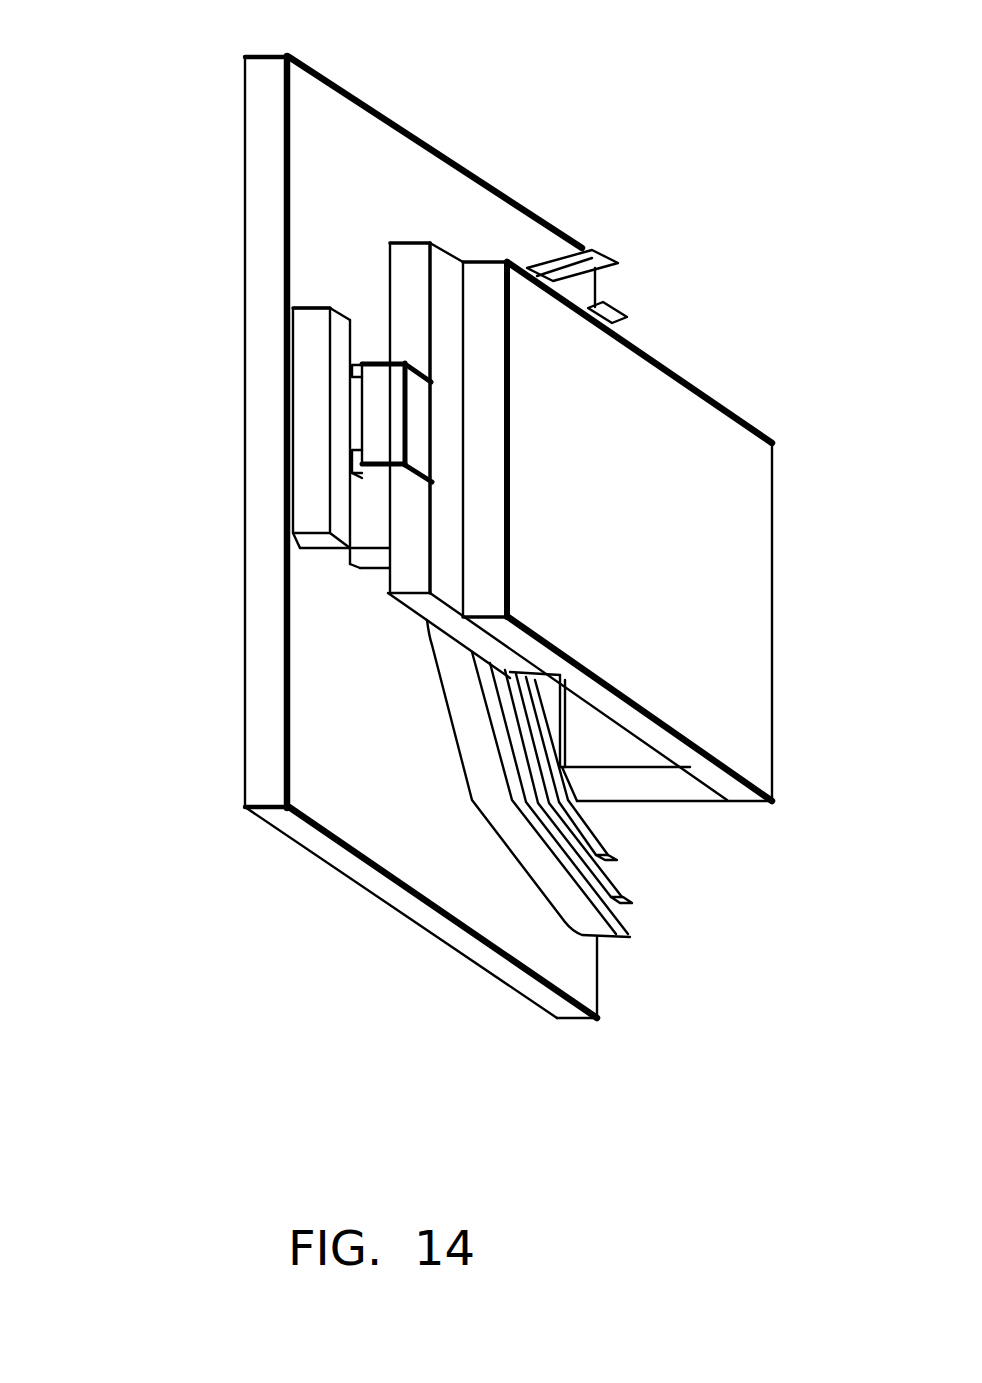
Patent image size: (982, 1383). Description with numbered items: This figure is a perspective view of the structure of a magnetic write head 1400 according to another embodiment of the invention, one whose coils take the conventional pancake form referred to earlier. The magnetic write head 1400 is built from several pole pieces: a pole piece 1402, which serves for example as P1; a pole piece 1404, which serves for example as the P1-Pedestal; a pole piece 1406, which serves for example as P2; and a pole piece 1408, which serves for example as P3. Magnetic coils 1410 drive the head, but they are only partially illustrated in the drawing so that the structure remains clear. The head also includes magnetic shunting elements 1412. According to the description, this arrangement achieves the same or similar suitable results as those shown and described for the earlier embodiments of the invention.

The magnetic write head 1400 is at (622, 33).
The pole piece 1402 is at (262, 538).
The pole piece 1404 is at (300, 348).
The pole piece 1406 is at (400, 480).
The pole piece 1408 is at (613, 708).
The magnetic coils 1410 is at (583, 912).
The magnetic shunting elements 1412 is at (376, 548).